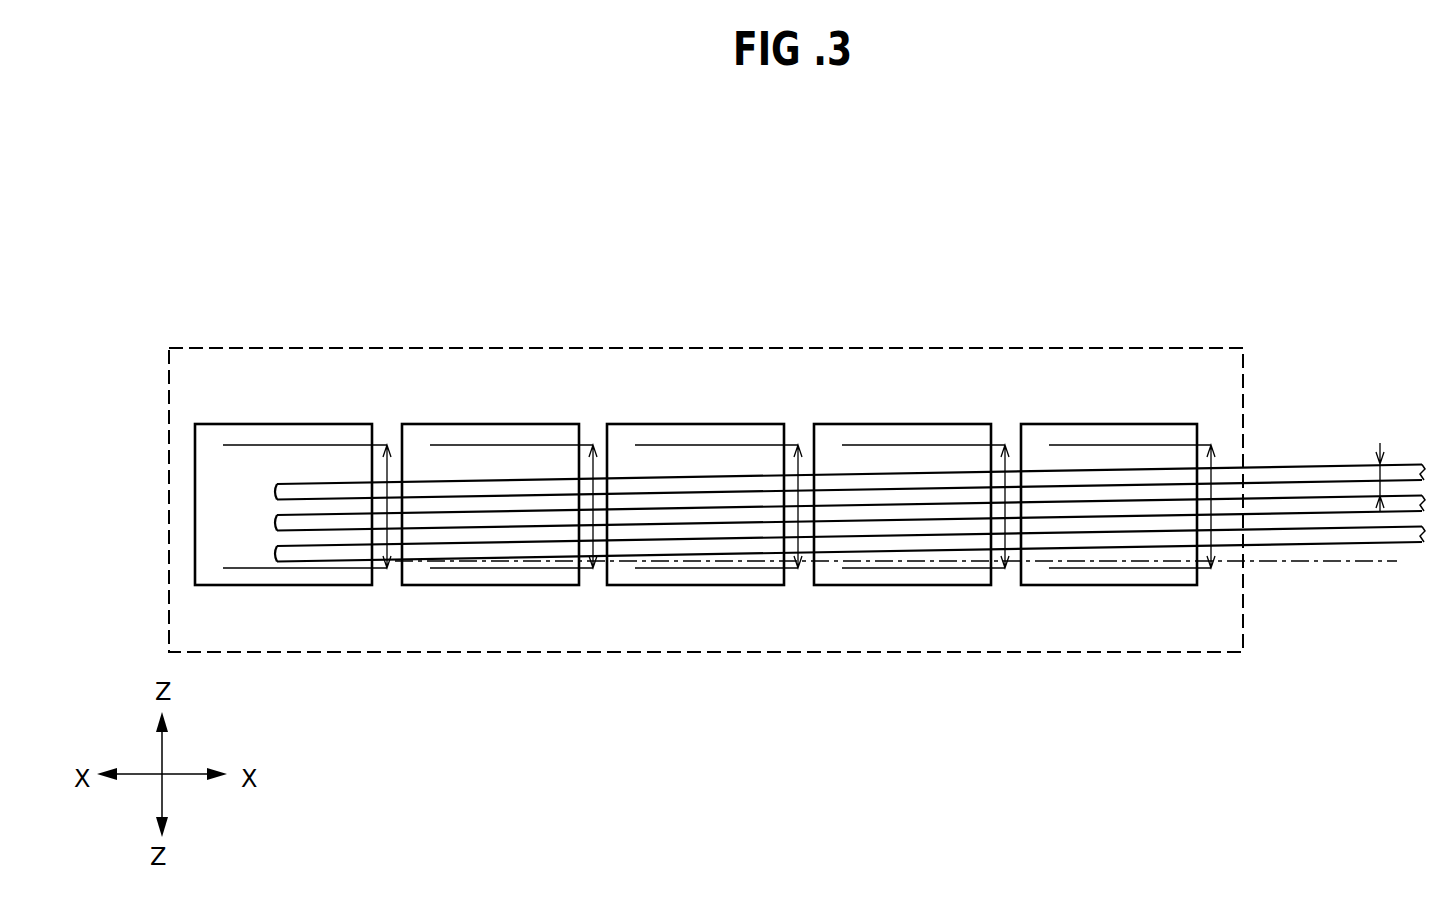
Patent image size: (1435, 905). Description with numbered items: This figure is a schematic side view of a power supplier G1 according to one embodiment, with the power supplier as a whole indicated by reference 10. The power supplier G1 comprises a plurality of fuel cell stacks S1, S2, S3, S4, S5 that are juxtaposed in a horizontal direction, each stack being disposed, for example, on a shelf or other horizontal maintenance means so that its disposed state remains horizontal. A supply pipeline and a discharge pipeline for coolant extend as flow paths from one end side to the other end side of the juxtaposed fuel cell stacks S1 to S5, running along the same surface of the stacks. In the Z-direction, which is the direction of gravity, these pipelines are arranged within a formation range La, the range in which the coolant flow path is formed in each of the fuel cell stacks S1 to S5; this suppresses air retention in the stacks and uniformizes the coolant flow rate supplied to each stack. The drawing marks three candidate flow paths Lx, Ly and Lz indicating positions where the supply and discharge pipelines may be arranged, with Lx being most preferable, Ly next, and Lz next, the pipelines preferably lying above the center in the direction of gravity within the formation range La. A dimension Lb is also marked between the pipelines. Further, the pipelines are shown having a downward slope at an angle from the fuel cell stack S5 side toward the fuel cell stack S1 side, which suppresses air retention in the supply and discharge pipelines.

The optical fiber array / optical device 10 is at (556, 218).
The power supplier G1 is at (168, 506).
The fuel cell stack S1 is at (261, 424).
The fuel cell stack S2 is at (466, 424).
The fuel cell stack S3 is at (671, 424).
The fuel cell stack S4 is at (878, 424).
The fuel cell stack S5 is at (1083, 424).
The formation range La is at (389, 462).
The flow path Lx is at (1312, 463).
The flow path Ly is at (1360, 495).
The fiber pitch Lb is at (1380, 443).
The flow path Lz is at (1280, 543).